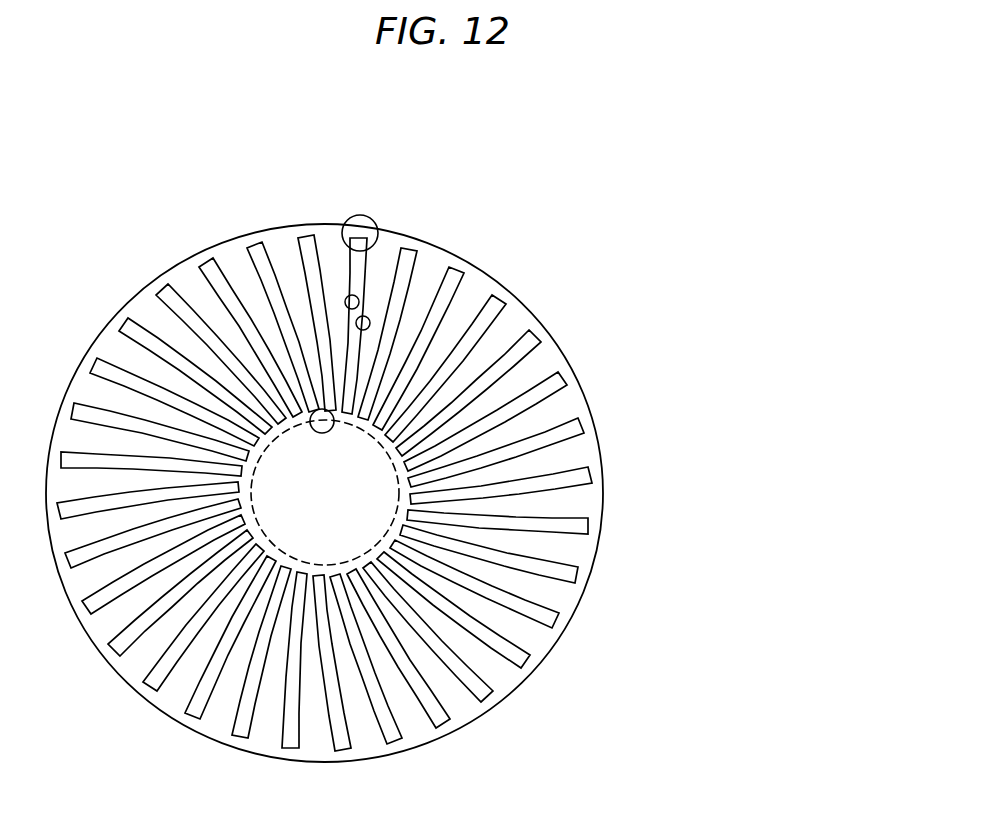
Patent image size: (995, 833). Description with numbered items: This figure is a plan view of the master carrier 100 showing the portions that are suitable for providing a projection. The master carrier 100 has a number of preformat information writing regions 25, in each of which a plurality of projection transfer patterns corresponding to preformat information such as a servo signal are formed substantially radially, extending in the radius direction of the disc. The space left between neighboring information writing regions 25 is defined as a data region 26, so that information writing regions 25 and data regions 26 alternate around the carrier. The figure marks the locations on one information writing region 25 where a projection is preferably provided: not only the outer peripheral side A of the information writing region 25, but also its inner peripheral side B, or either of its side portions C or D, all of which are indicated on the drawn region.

The master carrier 100 is at (408, 230).
The preformat information writing region 25 is at (533, 333).
The data region 26 is at (508, 328).
The outer peripheral side A is at (368, 215).
The inner peripheral side B is at (312, 412).
The side portion C is at (360, 317).
The side portion D is at (369, 320).